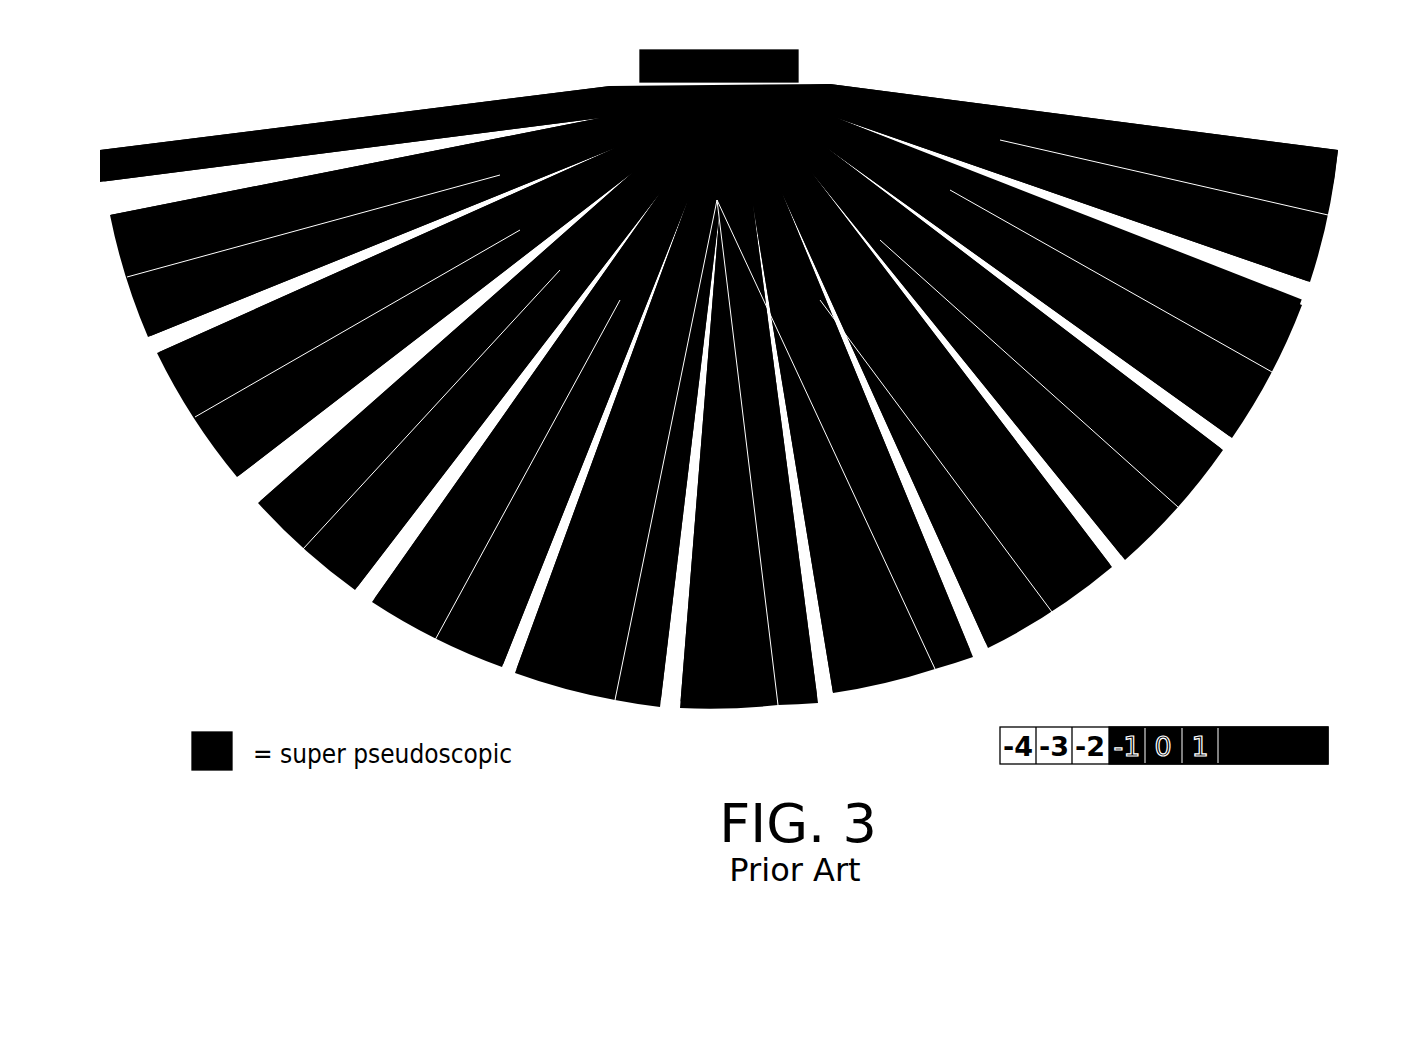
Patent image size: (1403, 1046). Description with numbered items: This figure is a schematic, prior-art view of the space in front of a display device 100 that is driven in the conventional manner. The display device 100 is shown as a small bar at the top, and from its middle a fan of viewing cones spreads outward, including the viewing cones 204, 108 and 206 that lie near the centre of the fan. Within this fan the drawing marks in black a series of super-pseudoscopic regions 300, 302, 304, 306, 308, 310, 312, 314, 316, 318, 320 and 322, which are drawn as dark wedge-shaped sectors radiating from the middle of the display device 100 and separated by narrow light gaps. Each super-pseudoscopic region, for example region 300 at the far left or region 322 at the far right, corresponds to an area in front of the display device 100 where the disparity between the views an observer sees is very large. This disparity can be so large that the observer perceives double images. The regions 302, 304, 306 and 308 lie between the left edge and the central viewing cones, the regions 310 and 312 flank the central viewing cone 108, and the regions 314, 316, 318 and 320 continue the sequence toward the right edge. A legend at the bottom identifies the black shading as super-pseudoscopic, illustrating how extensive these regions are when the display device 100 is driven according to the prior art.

The display device 100 is at (800, 70).
The viewing cone 108 is at (702, 700).
The viewing cone 204 is at (578, 677).
The viewing cone 206 is at (853, 693).
The super-pseudoscopic region 300 is at (100, 170).
The super-pseudoscopic region 302 is at (145, 328).
The super-pseudoscopic region 304 is at (227, 472).
The super-pseudoscopic region 306 is at (343, 587).
The super-pseudoscopic region 308 is at (485, 662).
The super-pseudoscopic region 310 is at (637, 705).
The super-pseudoscopic region 312 is at (803, 705).
The super-pseudoscopic region 314 is at (963, 663).
The super-pseudoscopic region 316 is at (1100, 582).
The super-pseudoscopic region 318 is at (1217, 465).
The super-pseudoscopic region 320 is at (1298, 327).
The super-pseudoscopic region 322 is at (1340, 168).